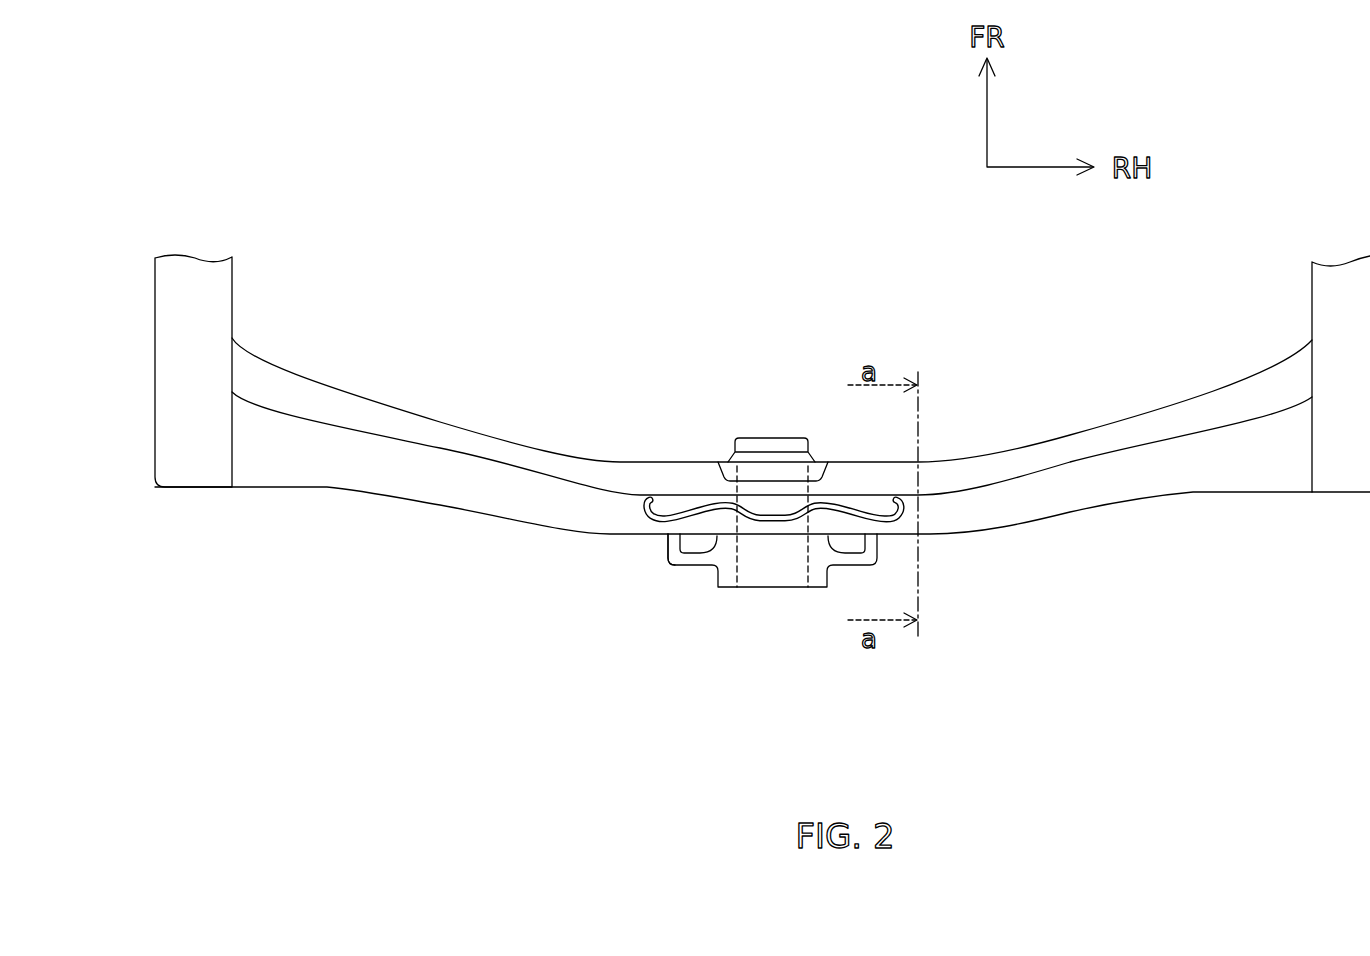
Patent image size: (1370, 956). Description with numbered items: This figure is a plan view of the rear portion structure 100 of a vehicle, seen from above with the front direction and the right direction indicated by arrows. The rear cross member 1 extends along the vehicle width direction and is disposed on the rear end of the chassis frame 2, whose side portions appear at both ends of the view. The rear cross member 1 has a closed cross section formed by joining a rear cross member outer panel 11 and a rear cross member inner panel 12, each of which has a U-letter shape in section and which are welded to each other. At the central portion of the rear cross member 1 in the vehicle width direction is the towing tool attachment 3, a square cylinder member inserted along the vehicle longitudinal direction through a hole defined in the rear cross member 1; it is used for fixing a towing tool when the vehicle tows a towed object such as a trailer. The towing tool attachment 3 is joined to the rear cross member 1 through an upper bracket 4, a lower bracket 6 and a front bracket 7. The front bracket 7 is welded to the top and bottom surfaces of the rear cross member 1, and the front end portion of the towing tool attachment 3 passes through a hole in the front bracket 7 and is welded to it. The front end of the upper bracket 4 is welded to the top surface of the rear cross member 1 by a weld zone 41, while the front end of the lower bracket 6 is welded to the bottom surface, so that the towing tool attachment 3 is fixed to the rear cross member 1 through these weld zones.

The rear cross member 1 is at (740, 497).
The rear cross member outer panel 11 is at (1225, 402).
The rear cross member inner panel 12 is at (1178, 468).
The chassis frame 2 is at (140, 409).
The towing tool attachment 3 is at (753, 513).
The upper bracket 4 is at (755, 522).
The weld zone 41 is at (667, 508).
The lower bracket 6 is at (668, 556).
The front bracket 7 is at (724, 470).
The rear portion structure 100 is at (716, 487).